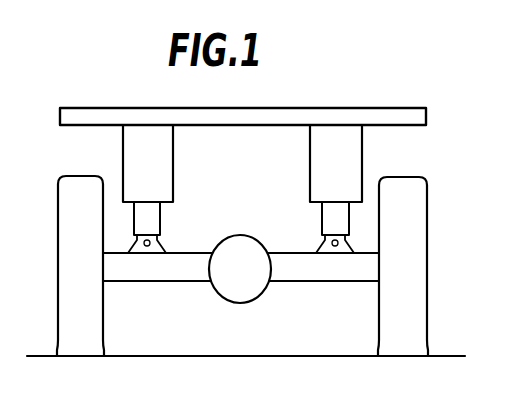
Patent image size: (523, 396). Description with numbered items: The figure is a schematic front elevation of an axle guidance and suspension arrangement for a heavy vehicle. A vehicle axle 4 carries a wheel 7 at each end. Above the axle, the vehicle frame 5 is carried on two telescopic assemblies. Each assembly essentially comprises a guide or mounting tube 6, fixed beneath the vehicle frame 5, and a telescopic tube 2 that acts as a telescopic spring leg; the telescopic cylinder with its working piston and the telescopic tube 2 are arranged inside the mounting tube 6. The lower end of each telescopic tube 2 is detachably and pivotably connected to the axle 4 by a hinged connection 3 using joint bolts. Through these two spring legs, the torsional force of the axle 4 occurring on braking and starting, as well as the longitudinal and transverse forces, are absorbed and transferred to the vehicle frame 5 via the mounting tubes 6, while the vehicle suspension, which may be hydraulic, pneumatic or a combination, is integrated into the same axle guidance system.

The telescopic tube 2 is at (158, 216).
The hinged connection 3 is at (147, 248).
The vehicle axle 4 is at (294, 270).
The vehicle frame 5 is at (389, 118).
The mounting tube 6 is at (128, 150).
The wheel 7 is at (70, 297).